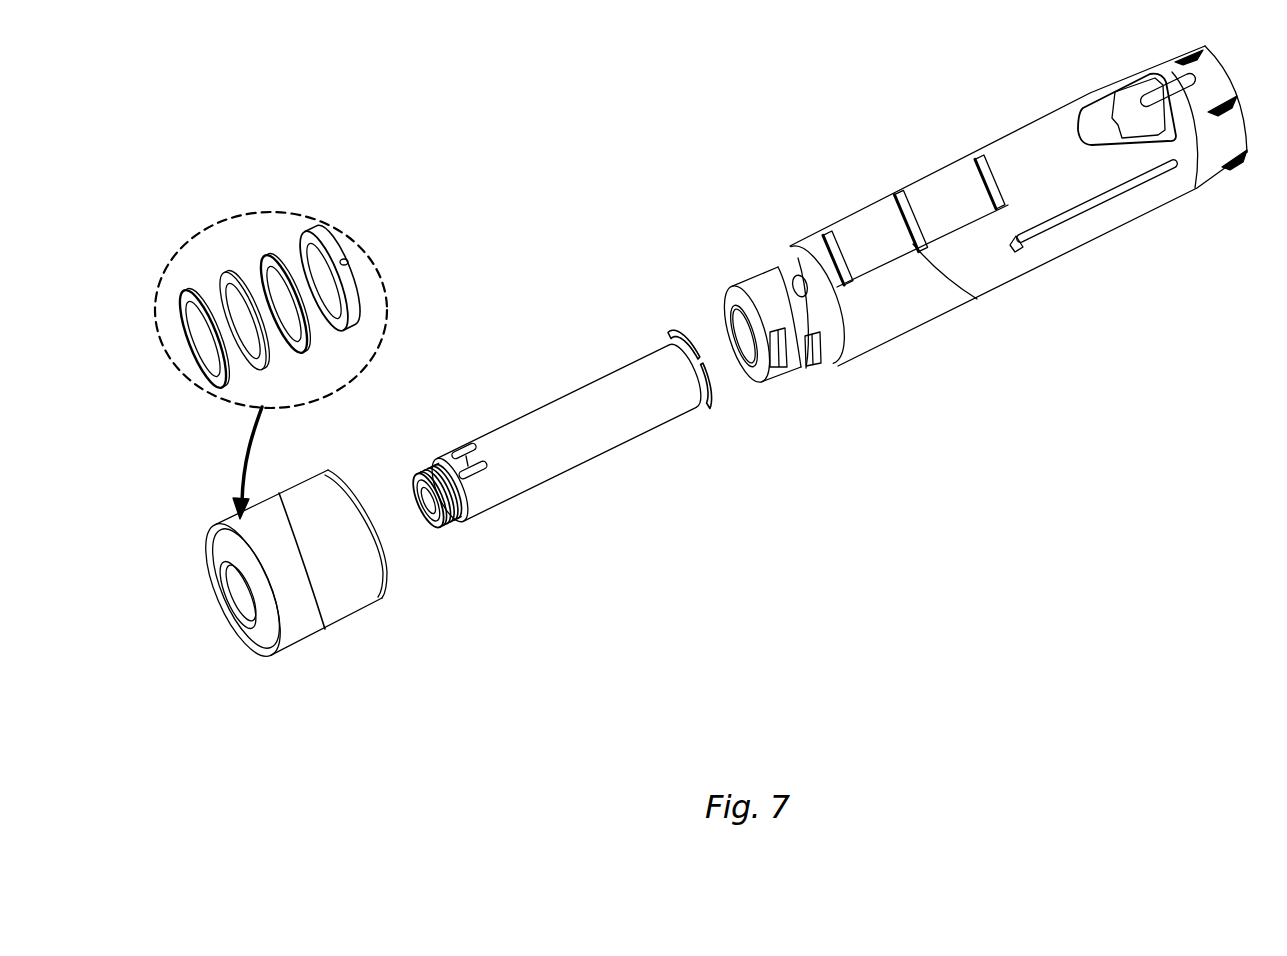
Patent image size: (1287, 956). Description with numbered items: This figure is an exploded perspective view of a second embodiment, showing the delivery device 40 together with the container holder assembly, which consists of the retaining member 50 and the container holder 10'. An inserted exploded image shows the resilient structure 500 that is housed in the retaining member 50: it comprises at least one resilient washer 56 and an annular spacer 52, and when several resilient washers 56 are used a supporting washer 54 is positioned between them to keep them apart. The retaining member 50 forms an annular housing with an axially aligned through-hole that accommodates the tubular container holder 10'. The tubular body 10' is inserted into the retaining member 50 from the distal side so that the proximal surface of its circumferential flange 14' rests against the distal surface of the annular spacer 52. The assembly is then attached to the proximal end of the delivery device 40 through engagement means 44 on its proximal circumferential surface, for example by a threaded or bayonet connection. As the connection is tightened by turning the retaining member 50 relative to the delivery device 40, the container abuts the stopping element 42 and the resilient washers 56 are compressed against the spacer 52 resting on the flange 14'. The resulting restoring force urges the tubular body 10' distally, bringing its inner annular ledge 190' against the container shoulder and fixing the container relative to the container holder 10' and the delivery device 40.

The resilient structure 500 is at (353, 243).
The resilient washer 56 is at (186, 290).
The supporting washer 54 is at (263, 367).
The annular spacer 52 is at (322, 250).
The retaining member 50 is at (310, 581).
The container holder 10' is at (554, 437).
The inner annular ledge 190' is at (514, 371).
The circumferential flange 14' is at (686, 458).
The delivery device 40 is at (1057, 182).
The stopping element 42 is at (755, 382).
The engagement means 44 is at (790, 373).